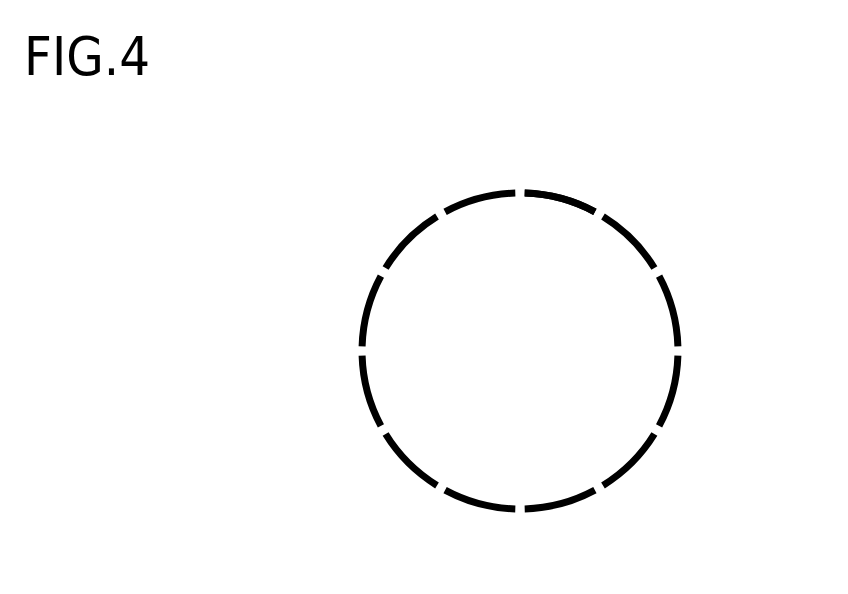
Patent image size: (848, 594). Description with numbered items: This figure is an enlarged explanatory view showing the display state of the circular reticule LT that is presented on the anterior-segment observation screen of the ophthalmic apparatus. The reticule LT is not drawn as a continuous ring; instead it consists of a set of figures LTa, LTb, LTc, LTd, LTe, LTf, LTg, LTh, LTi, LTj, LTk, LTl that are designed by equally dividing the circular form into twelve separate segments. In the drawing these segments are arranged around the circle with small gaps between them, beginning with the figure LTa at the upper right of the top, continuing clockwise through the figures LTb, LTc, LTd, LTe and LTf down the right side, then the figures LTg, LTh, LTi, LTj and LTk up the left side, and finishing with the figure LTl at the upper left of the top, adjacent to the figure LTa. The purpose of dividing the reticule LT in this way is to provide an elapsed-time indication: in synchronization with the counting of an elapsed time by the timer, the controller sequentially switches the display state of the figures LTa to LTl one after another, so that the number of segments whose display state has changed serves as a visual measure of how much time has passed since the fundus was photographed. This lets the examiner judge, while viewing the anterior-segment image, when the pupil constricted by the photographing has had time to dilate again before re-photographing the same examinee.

The reticule LT is at (717, 225).
The figure LTa is at (545, 192).
The figure LTb is at (637, 230).
The figure LTc is at (678, 305).
The figure LTd is at (679, 388).
The figure LTe is at (632, 470).
The figure LTf is at (562, 505).
The figure LTg is at (470, 505).
The figure LTh is at (393, 452).
The figure LTi is at (362, 380).
The figure LTj is at (368, 300).
The figure LTk is at (418, 228).
The figure LTl is at (470, 197).